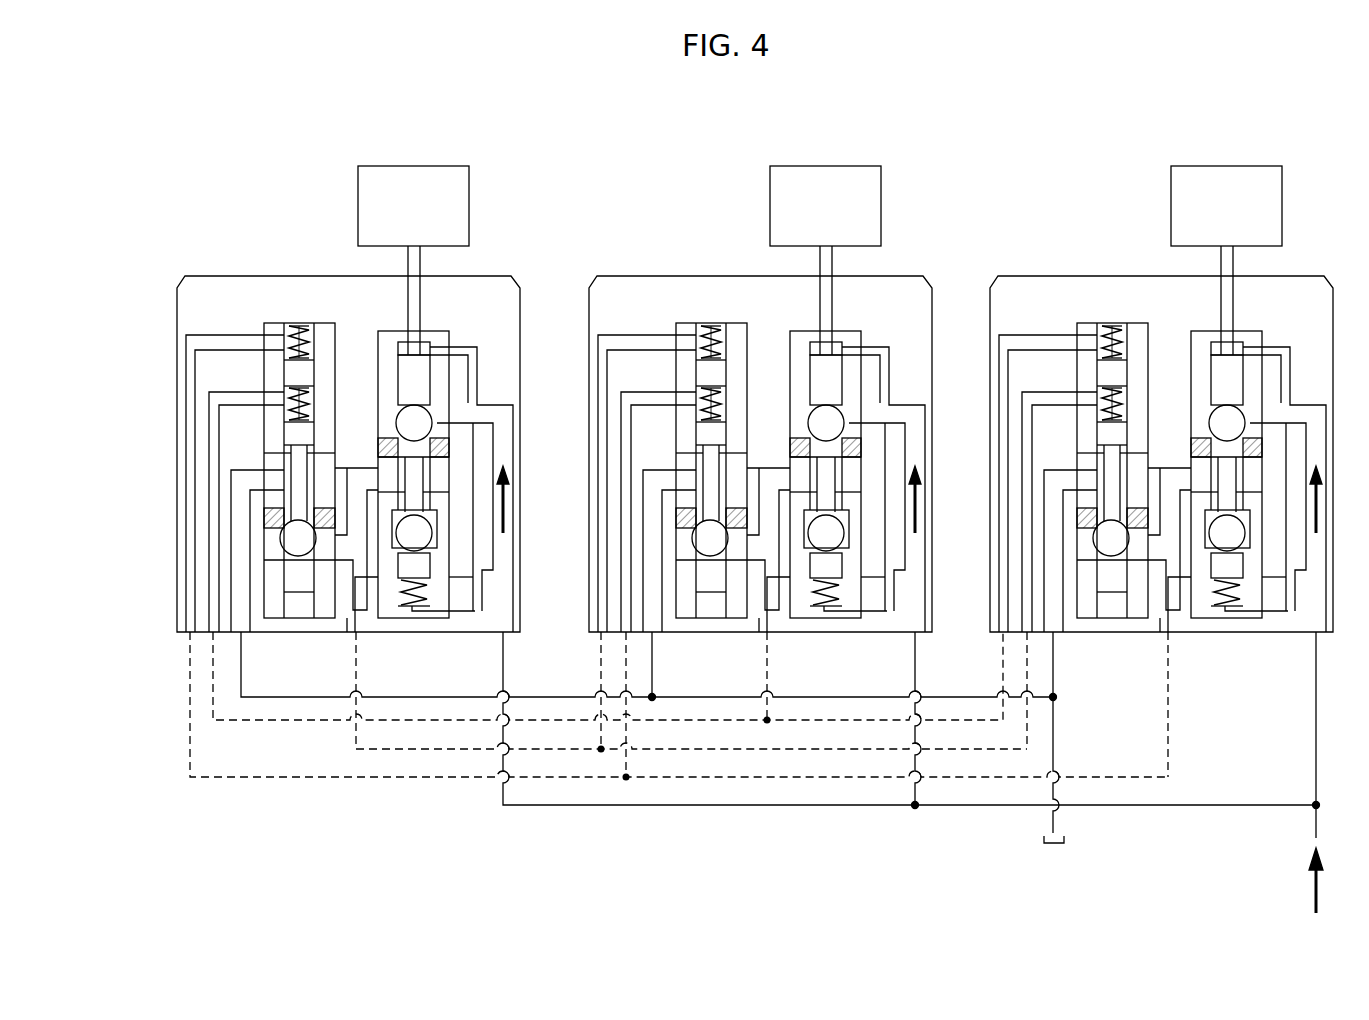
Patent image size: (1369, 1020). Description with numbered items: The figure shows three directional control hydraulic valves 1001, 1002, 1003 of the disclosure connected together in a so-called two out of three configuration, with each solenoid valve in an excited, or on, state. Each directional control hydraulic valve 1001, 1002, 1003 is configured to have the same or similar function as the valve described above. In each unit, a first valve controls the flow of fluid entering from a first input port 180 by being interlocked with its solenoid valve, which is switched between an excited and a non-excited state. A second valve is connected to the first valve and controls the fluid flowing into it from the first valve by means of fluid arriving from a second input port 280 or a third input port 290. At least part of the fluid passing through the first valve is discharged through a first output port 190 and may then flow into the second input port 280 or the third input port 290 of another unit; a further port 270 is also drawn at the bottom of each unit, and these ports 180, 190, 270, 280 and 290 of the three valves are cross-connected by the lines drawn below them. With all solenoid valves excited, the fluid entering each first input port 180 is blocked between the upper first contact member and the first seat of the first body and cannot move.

The directional control hydraulic valve 1001 is at (1109, 219).
The directional control hydraulic valve 1002 is at (709, 219).
The directional control hydraulic valve 1003 is at (289, 219).
The first input port 180 is at (503, 633).
The first output port 190 is at (356, 633).
The return line 270 is at (241, 633).
The second input port 280 is at (213, 633).
The third input port 290 is at (190, 633).